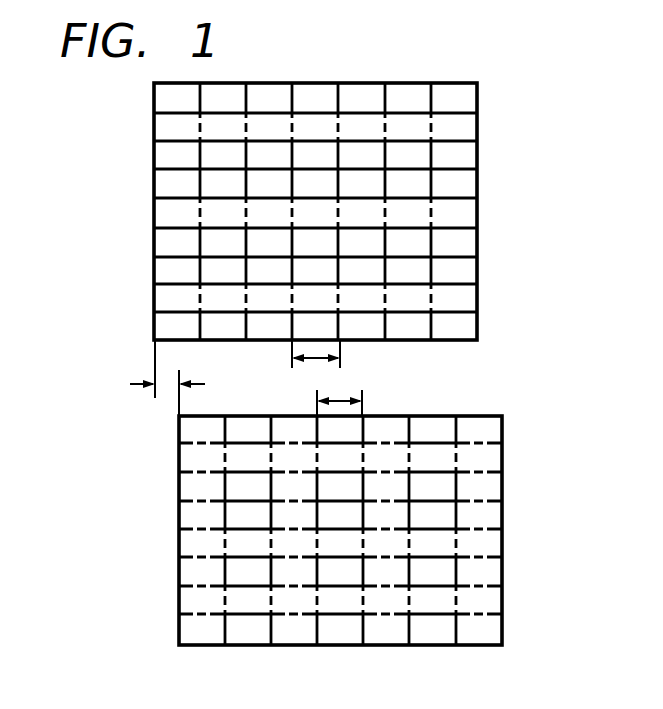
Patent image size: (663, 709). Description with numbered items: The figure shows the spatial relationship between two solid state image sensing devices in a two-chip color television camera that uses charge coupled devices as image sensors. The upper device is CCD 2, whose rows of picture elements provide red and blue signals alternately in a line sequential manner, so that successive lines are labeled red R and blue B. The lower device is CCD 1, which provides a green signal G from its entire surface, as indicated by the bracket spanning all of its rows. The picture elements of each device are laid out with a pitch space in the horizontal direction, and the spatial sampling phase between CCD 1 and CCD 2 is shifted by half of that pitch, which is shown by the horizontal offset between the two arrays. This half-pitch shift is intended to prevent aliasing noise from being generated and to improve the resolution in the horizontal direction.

The CCD 1 is at (343, 650).
The CCD 2 is at (364, 187).
The red signal R is at (475, 101).
The blue signal B is at (475, 134).
The green signal G is at (525, 410).